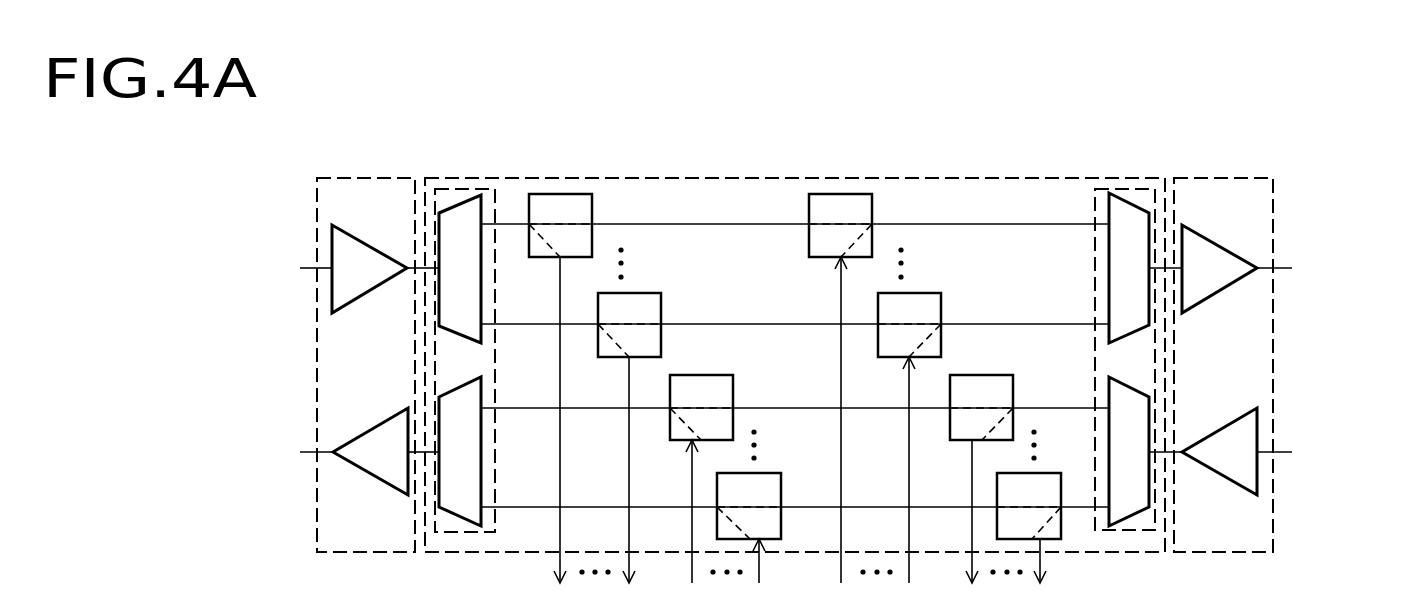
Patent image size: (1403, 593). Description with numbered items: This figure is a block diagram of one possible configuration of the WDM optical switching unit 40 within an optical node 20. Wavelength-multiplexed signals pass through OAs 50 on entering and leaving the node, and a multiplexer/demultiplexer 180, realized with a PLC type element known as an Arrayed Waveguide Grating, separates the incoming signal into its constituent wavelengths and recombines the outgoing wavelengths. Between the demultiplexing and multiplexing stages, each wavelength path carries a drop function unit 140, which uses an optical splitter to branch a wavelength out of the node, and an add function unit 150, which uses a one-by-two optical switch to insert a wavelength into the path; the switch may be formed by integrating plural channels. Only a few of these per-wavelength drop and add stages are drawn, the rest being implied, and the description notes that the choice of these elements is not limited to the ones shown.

The optical node 20 is at (1395, 202).
The WDM optical switching unit 40 is at (1103, 552).
The OA 50 is at (318, 232).
The drop function unit 140 is at (593, 211).
The add function unit 150 is at (873, 211).
The multiplexer/demultiplexer 180 is at (435, 361).